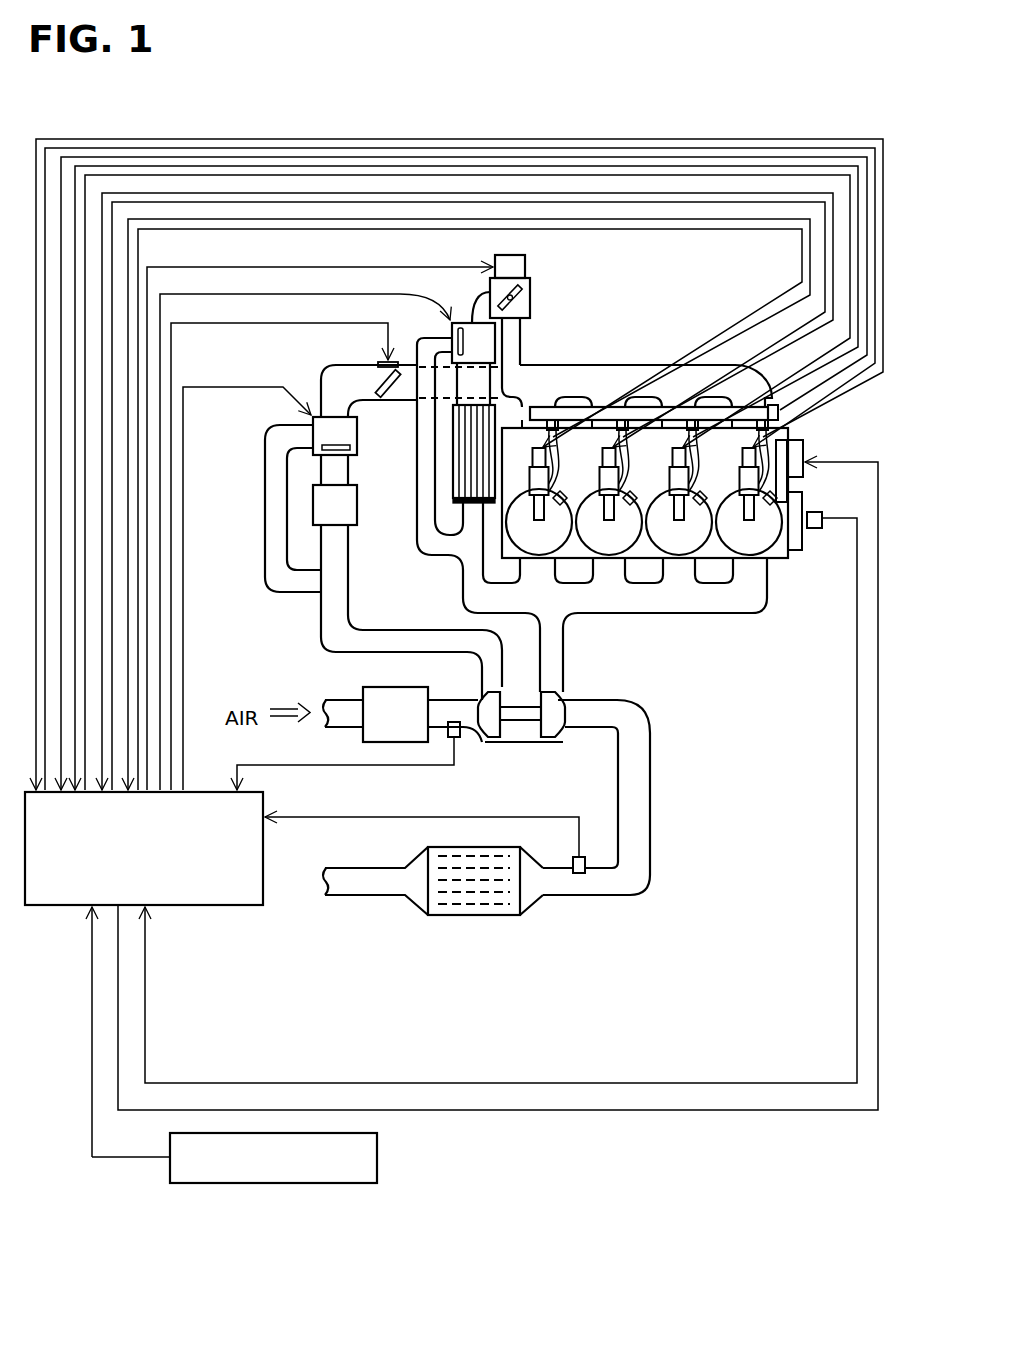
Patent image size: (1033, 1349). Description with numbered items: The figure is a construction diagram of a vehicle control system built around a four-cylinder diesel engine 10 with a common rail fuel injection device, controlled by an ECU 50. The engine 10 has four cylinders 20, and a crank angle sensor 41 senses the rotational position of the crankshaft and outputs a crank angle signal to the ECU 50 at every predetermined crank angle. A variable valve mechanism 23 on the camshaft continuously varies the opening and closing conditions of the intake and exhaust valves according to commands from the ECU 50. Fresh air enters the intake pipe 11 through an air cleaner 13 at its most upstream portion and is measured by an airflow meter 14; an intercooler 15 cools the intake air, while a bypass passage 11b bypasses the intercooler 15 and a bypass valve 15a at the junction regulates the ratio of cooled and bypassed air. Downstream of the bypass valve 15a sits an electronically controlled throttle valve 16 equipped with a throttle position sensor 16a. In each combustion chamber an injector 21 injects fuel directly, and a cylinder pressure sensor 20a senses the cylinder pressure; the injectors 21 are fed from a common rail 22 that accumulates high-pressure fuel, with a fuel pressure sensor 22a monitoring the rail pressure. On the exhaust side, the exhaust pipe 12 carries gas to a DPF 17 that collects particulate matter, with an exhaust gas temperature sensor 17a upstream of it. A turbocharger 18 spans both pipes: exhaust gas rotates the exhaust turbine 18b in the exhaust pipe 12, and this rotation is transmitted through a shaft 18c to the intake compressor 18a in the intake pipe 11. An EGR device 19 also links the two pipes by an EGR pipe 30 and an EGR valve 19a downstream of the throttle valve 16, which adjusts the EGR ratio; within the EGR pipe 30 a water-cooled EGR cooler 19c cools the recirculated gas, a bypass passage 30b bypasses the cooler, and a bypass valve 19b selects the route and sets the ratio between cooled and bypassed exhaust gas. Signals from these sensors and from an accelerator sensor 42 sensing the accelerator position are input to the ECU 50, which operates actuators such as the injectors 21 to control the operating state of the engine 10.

The engine 10 is at (689, 419).
The intake pipe 11 is at (322, 613).
The bypass passage 11b is at (265, 508).
The exhaust pipe 12 is at (638, 613).
The air cleaner 13 is at (388, 687).
The airflow meter 14 is at (463, 753).
The intercooler 15 is at (352, 505).
The bypass valve 15a is at (357, 433).
The throttle valve 16 is at (375, 377).
The throttle position sensor 16a is at (378, 362).
The DPF 17 is at (473, 915).
The exhaust gas temperature sensor 17a is at (587, 857).
The turbocharger 18 is at (562, 713).
The intake compressor 18a is at (487, 740).
The exhaust turbine 18b is at (558, 697).
The shaft 18c is at (530, 722).
The EGR device 19 is at (543, 283).
The EGR valve 19a is at (532, 297).
The bypass valve 19b is at (432, 310).
The EGR cooler 19c is at (453, 478).
The cylinders 20 is at (551, 544).
The cylinder pressure sensor 20a is at (780, 502).
The injector 21 is at (529, 473).
The common rail 22 is at (545, 405).
The fuel pressure sensor 22a is at (778, 408).
The variable valve mechanism 23 is at (803, 445).
The EGR pipe 30 is at (470, 325).
The bypass passage 30b is at (420, 553).
The crank angle sensor 41 is at (815, 528).
The accelerator sensor 42 is at (377, 1158).
The ECU 50 is at (52, 905).